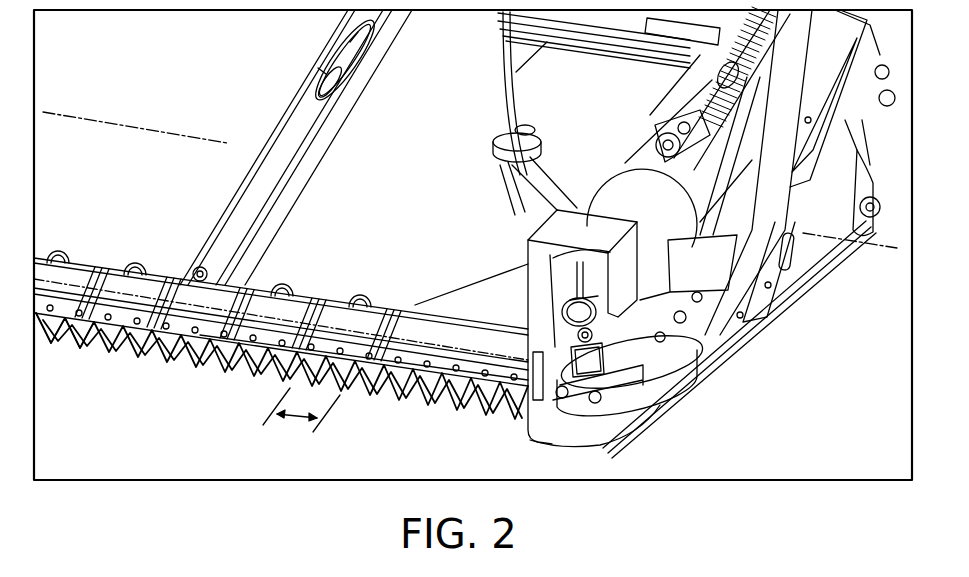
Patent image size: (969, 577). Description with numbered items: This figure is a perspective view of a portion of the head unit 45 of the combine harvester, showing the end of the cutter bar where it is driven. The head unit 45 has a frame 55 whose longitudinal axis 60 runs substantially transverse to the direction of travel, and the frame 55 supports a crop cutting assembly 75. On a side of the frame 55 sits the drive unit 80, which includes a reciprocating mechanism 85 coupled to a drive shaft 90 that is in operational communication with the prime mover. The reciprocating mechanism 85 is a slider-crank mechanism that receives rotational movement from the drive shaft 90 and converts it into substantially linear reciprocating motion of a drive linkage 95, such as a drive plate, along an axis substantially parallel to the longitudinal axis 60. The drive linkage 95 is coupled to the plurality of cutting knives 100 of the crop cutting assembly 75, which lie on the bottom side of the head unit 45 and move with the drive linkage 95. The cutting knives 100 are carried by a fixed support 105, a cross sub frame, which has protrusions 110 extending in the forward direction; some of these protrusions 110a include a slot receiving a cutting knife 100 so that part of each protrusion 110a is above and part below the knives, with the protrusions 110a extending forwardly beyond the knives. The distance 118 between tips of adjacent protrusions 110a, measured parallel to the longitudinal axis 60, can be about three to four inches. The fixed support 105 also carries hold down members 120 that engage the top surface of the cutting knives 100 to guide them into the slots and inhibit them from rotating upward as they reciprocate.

The head unit 45 is at (188, 72).
The frame 55 is at (860, 176).
The longitudinal axis 60 is at (873, 245).
The crop cutting assembly 75 is at (411, 202).
The drive unit 80 is at (838, 386).
The reciprocating mechanism 85 is at (637, 352).
The drive shaft 90 is at (712, 100).
The drive linkage 95 is at (512, 415).
The cutting knives 100 is at (178, 424).
The fixed support 105 is at (365, 318).
The protrusions 110 is at (347, 432).
The slotted protrusions 110a is at (90, 340).
The distance between adjacent protrusions 118 is at (295, 422).
The hold down members 120 is at (78, 310).